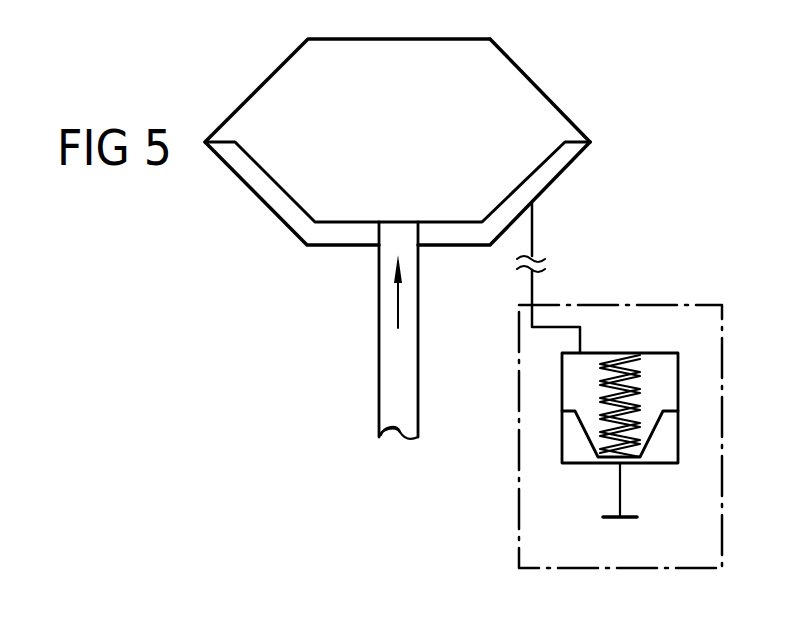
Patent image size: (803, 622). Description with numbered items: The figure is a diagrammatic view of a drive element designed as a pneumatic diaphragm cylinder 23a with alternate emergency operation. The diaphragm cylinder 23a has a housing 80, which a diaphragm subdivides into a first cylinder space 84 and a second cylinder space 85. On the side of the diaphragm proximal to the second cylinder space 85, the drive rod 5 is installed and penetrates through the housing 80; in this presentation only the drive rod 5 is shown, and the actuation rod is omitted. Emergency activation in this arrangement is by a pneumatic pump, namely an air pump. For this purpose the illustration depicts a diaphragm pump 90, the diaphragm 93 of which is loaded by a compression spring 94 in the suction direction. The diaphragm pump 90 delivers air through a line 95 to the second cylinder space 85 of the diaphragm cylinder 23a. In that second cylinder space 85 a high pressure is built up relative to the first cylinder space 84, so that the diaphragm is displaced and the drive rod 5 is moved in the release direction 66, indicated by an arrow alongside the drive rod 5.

The pneumatic diaphragm cylinder 23a is at (277, 254).
The housing 80 is at (265, 82).
The first cylinder space 84 is at (518, 97).
The second cylinder space 85 is at (563, 160).
The drive rod 5 is at (393, 375).
The release direction 66 is at (395, 297).
The electrical line 95 is at (533, 226).
The diaphragm pump 90 is at (561, 438).
The diaphragm 93 is at (657, 424).
The compression spring 94 is at (649, 373).